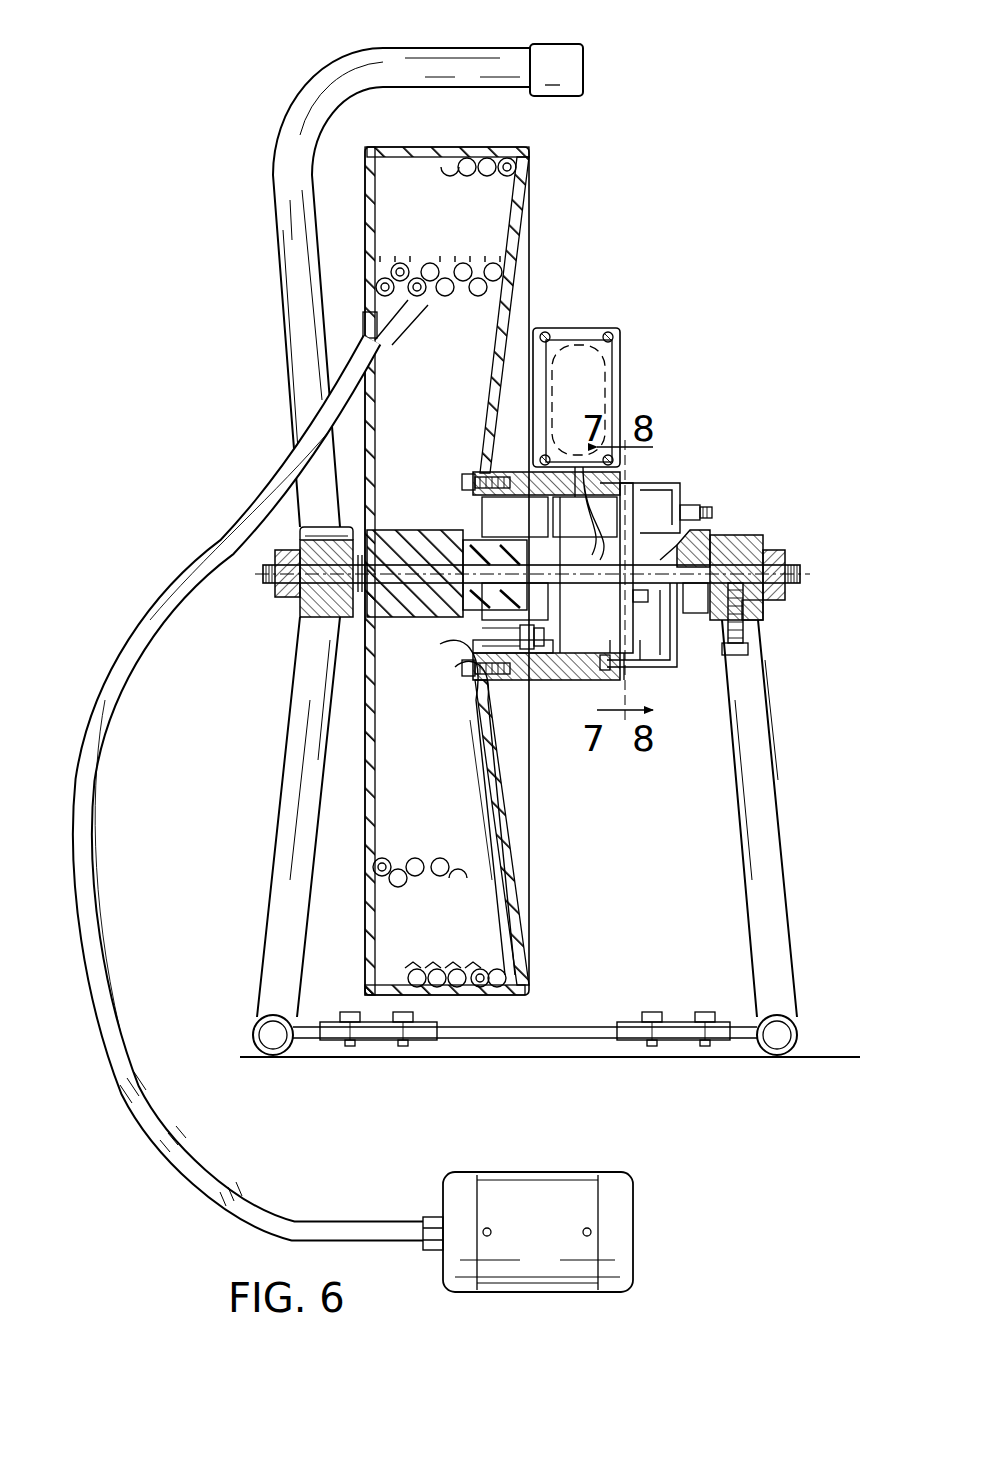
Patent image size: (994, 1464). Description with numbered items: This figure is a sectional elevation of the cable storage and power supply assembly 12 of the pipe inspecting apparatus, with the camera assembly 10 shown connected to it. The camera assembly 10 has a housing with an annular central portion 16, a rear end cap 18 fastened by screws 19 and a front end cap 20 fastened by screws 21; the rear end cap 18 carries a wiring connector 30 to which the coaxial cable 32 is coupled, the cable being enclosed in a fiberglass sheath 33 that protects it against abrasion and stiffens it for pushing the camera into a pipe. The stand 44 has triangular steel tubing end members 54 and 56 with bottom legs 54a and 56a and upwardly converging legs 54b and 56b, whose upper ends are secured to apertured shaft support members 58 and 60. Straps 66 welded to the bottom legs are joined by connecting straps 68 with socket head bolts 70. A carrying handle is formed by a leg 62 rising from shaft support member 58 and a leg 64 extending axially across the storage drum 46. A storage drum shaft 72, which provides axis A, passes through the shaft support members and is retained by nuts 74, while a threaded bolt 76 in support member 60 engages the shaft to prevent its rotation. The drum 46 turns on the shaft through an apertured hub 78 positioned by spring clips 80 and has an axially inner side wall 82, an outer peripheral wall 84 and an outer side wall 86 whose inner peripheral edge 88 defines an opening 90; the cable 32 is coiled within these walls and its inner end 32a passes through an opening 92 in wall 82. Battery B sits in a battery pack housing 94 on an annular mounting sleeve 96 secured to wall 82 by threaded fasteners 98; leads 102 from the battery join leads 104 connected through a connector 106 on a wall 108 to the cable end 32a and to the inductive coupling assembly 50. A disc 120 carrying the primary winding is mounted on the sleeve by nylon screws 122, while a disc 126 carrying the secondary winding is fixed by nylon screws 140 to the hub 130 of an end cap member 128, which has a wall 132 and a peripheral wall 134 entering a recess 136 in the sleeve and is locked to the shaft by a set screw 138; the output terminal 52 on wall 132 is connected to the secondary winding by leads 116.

The camera assembly 10 is at (545, 1220).
The cable storage and power supply assembly 12 is at (603, 350).
The annular central portion 16 is at (535, 1275).
The rear end cap 18 is at (460, 1182).
The screws 19 is at (485, 1238).
The annular front end cap 20 is at (552, 1228).
The screws 21 is at (592, 1235).
The wiring connector 30 is at (430, 1220).
The coaxial cable 32 is at (252, 792).
The inner end of coaxial cable 32a is at (470, 642).
The fiberglass sheath 33 is at (175, 1175).
The stand 44 is at (520, 864).
The cable storage drum 46 is at (424, 544).
The inductive coupling assembly 50 is at (630, 490).
The output terminal 52 is at (700, 535).
The end member 54 is at (248, 864).
The bottom leg 54a is at (270, 1057).
The legs 54b is at (290, 718).
The end member 56 is at (803, 837).
The bottom leg 56a is at (800, 1042).
The legs 56b is at (765, 800).
The shaft support member 58 is at (300, 610).
The shaft support member 60 is at (765, 540).
The leg of carrying handle 62 is at (290, 290).
The leg of carrying handle 64 is at (430, 58).
The straps 66 is at (385, 1043).
The connecting strap 68 is at (520, 1042).
The socket head bolts 70 is at (403, 1010).
The storage drum shaft 72 is at (330, 560).
The nuts 74 is at (280, 596).
The threaded bolt 76 is at (740, 635).
The apertured hub 78 is at (390, 525).
The spring clips 80 is at (525, 573).
The axially inner side wall 82 is at (500, 358).
The radially outer peripheral wall 84 is at (470, 152).
The axially outer side wall 86 is at (368, 233).
The radially inner peripheral edge 88 is at (365, 326).
The opening 90 is at (368, 800).
The opening 92 is at (482, 637).
The battery pack housing 94 is at (604, 325).
The annular mounting sleeve 96 is at (540, 683).
The threaded fasteners 98 is at (468, 477).
The leads 102 is at (580, 490).
The leads 104 is at (555, 672).
The connector 106 is at (495, 668).
The wall 108 is at (520, 612).
The leads 116 is at (700, 500).
The disc 120 is at (570, 520).
The nylon screws 122 is at (665, 668).
The disc 126 is at (645, 500).
The end cap member 128 is at (683, 670).
The apertured hub 130 is at (735, 533).
The wall 132 is at (690, 640).
The radially outer peripheral wall 134 is at (650, 660).
The recess 136 is at (624, 690).
The set screw 138 is at (763, 608).
The nylon screws 140 is at (692, 660).
The axis A is at (405, 573).
The battery B is at (597, 385).